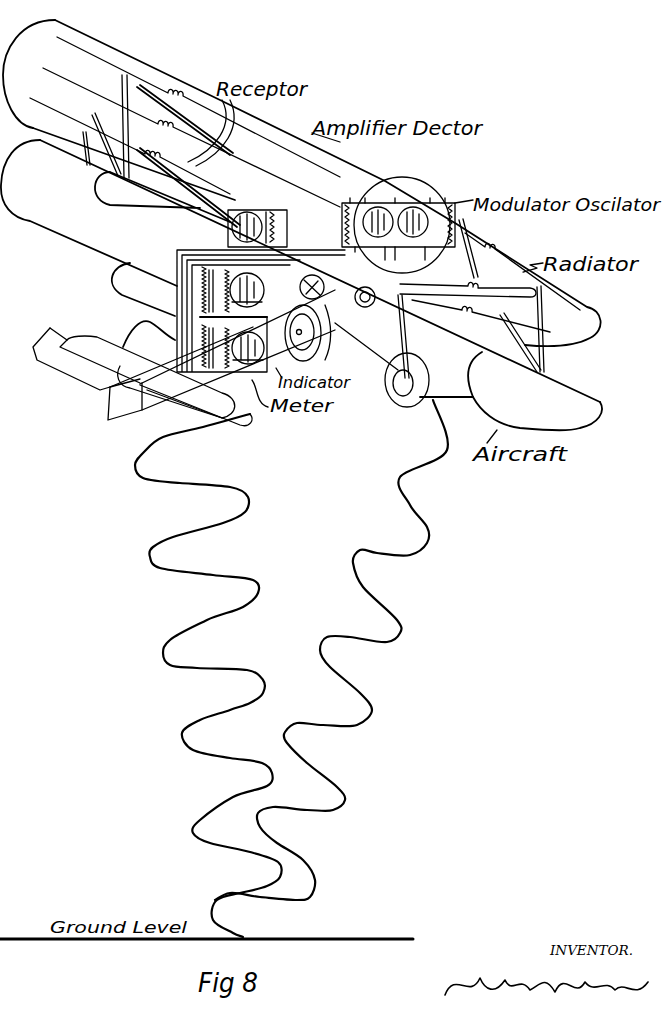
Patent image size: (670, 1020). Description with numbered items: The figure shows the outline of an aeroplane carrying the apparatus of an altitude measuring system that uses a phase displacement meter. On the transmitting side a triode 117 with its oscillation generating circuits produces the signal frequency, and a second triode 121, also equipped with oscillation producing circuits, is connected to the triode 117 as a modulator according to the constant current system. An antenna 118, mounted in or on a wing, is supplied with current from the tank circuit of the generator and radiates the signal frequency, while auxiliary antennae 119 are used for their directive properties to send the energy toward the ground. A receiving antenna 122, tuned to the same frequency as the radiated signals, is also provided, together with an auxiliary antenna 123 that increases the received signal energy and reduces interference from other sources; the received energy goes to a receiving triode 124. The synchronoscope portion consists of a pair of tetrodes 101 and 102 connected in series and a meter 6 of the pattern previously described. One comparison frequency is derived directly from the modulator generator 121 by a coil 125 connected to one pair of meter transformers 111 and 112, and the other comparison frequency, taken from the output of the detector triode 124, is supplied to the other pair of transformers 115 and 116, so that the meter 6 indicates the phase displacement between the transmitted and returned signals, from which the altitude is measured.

The auxiliary antenna 123 is at (37, 95).
The receiving antenna 122 is at (47, 70).
The receiving triode 124 is at (228, 237).
The coil 125 is at (280, 214).
The transformer 111 is at (195, 280).
The transformer 115 is at (200, 313).
The transformer 112 is at (195, 344).
The transformer 116 is at (198, 362).
The tetrode 101 is at (260, 277).
The tetrode 102 is at (265, 328).
The meter 6 is at (320, 290).
The second triode 121 is at (382, 185).
The triode 117 is at (428, 197).
The antenna 118 is at (553, 332).
The auxiliary antennae 119 is at (527, 343).